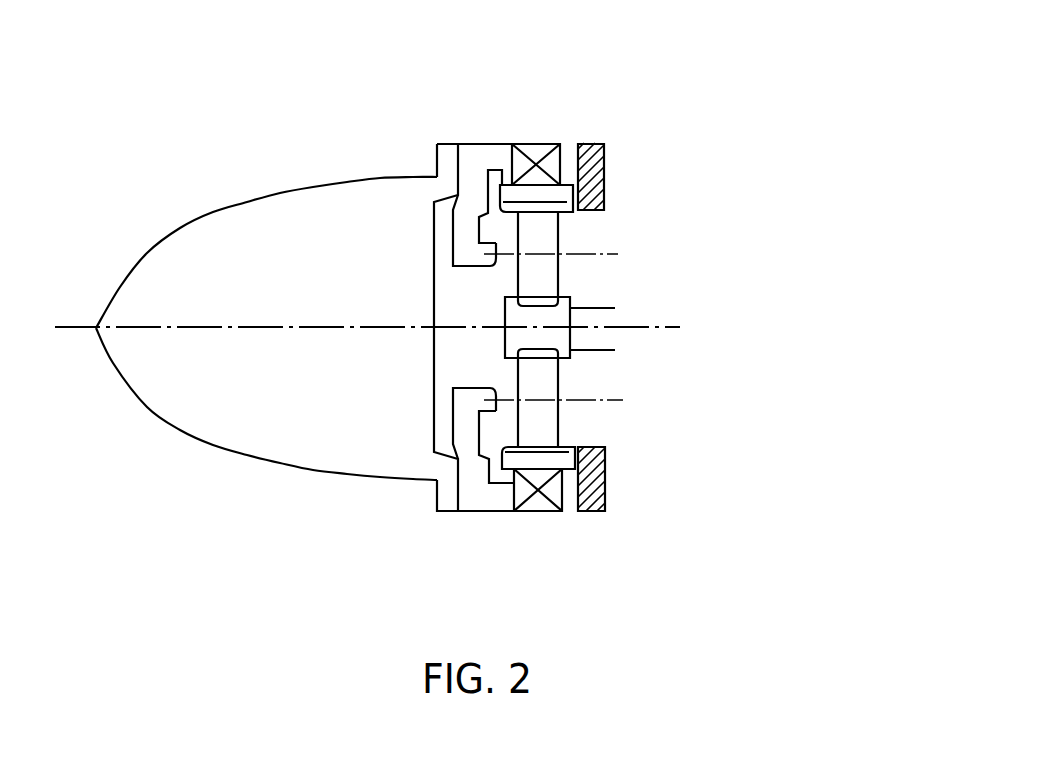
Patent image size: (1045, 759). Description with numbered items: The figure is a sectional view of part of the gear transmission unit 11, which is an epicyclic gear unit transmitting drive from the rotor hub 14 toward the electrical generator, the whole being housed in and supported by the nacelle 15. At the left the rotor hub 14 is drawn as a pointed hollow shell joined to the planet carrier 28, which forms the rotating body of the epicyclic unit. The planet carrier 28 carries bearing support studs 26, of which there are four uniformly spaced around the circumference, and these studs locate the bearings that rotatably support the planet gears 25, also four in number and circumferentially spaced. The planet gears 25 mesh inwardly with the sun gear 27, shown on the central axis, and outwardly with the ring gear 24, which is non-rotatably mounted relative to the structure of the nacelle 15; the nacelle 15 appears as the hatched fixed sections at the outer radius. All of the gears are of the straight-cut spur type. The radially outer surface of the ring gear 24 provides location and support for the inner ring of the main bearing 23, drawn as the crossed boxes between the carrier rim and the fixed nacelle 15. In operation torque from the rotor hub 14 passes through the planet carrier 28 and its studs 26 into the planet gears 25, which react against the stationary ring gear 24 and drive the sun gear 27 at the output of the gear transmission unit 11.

The gear transmission unit 11 is at (772, 248).
The rotor hub 14 is at (262, 457).
The nacelle 15 is at (592, 145).
The main bearing 23 is at (535, 143).
The ring gear 24 is at (573, 196).
The planet gears 25 is at (550, 229).
The bearing support studs 26 is at (487, 390).
The sun gear 27 is at (555, 312).
The planet carrier 28 is at (485, 511).